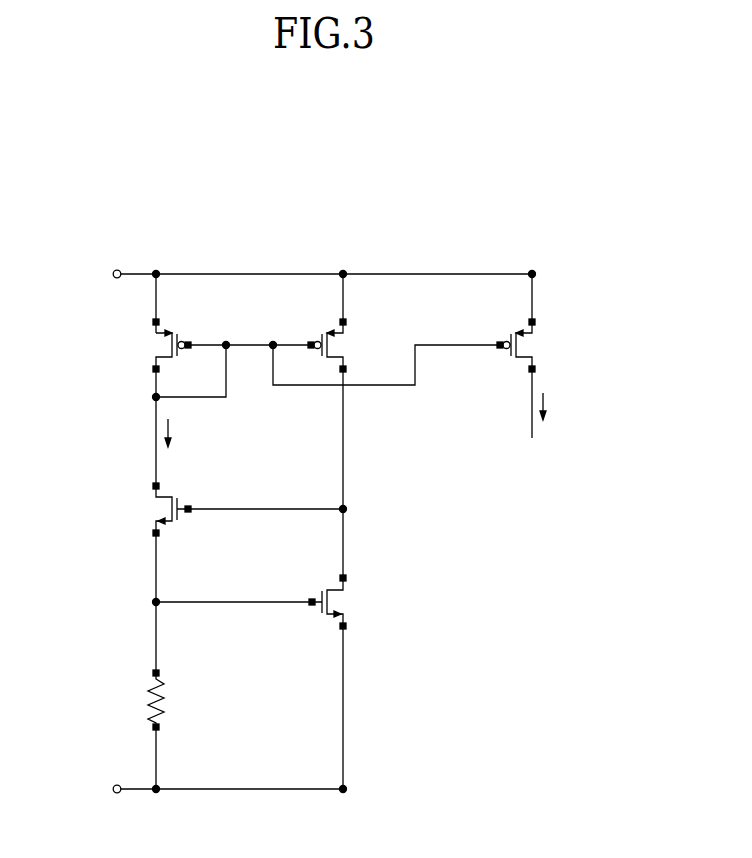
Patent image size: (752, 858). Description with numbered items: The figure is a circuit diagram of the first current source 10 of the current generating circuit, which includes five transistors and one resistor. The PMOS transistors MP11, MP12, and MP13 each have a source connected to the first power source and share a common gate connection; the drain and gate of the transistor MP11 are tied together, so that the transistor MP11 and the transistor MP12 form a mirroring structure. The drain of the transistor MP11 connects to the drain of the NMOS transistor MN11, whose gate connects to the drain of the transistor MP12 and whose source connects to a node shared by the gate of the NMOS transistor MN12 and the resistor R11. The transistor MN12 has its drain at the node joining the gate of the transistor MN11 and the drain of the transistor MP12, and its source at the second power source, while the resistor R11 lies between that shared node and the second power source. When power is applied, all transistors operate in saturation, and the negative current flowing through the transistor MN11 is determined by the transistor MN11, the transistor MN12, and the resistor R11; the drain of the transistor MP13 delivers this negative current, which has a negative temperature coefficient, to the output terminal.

The first current source 10 is at (563, 258).
The transistor MP11 is at (147, 380).
The transistor MP12 is at (353, 426).
The transistor MP13 is at (541, 356).
The transistor MN11 is at (147, 578).
The transistor MN12 is at (353, 682).
The resistor R11 is at (134, 729).